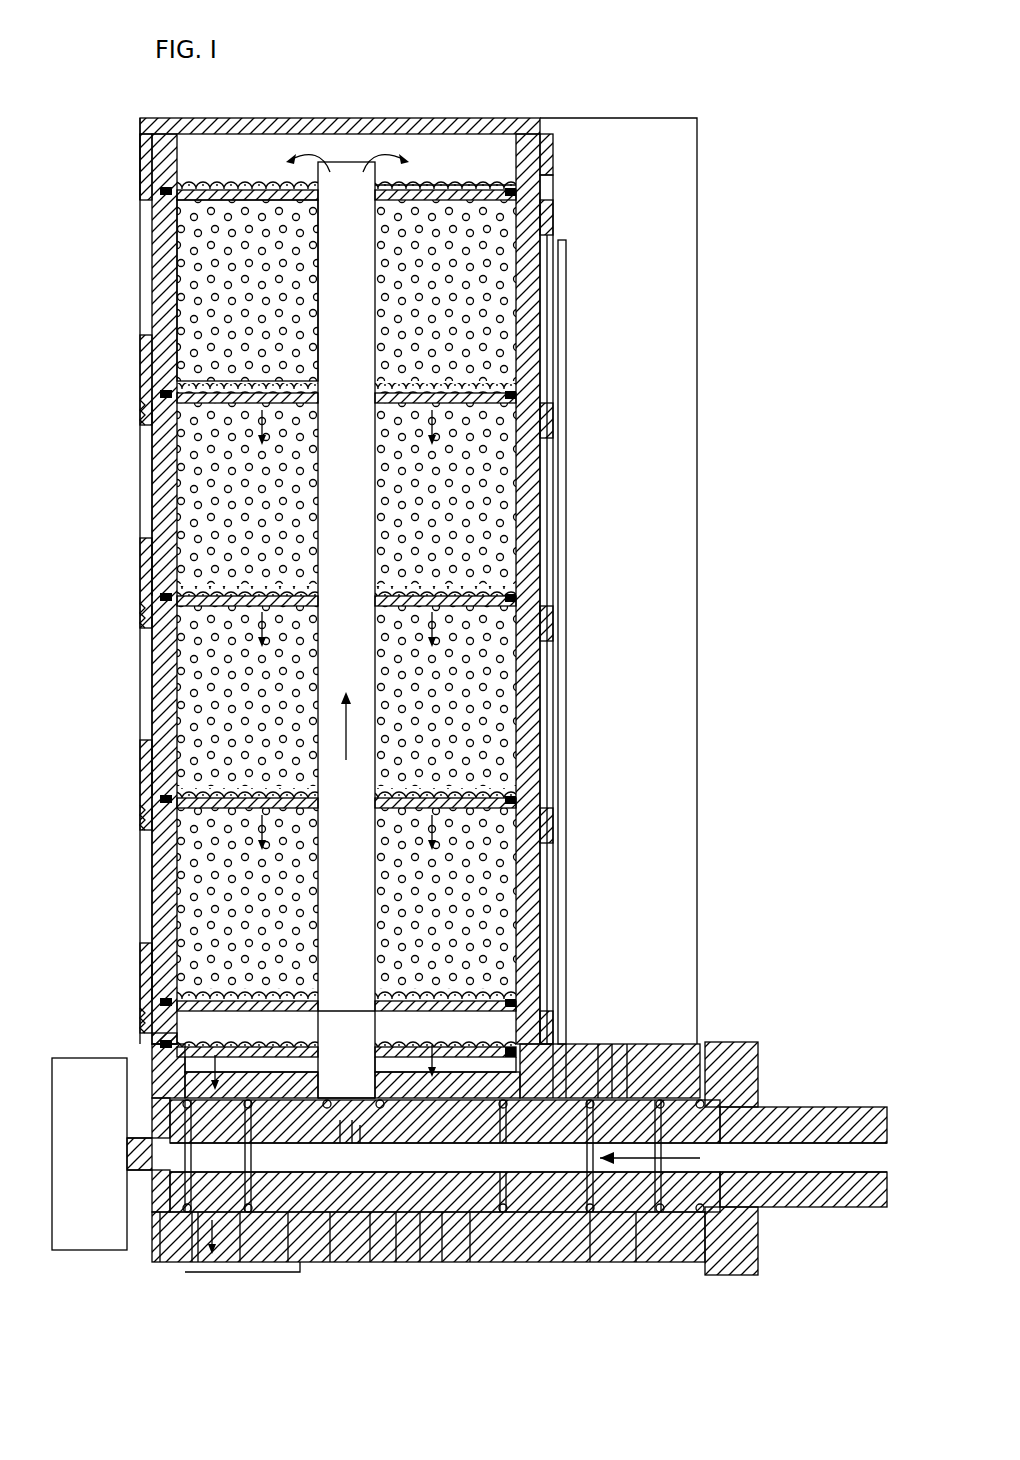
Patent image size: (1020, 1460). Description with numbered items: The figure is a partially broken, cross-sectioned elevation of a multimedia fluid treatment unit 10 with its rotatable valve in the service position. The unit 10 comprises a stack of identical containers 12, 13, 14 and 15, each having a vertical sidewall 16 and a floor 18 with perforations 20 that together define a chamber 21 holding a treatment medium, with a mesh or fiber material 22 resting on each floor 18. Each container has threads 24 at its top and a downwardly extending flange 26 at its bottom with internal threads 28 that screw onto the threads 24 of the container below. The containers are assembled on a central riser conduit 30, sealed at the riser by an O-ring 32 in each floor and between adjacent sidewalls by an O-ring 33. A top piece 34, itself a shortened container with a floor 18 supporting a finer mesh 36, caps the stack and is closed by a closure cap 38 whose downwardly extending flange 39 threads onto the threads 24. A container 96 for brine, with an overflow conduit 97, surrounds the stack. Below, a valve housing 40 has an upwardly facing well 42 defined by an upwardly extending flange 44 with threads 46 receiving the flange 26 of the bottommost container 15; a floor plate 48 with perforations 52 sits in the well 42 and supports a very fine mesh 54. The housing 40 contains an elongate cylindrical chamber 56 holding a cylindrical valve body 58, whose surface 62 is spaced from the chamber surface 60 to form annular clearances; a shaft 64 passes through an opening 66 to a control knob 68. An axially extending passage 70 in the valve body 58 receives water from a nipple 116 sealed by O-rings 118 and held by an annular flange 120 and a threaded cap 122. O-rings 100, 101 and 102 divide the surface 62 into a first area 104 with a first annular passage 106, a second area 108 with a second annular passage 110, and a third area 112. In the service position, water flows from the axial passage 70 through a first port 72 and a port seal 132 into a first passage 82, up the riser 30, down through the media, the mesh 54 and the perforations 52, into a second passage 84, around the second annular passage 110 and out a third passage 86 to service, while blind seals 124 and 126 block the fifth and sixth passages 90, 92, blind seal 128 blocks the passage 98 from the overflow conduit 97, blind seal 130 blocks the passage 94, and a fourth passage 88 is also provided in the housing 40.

The multimedia fluid treatment unit 10 is at (138, 306).
The container 12 is at (165, 250).
The container 13 is at (165, 485).
The container 14 is at (165, 680).
The container 15 is at (165, 880).
The vertical sidewall 16 is at (165, 335).
The floor 18 is at (275, 180).
The perforations 20 is at (462, 182).
The chamber 21 is at (232, 283).
The mesh or fiber material 22 is at (480, 375).
The threads 24 is at (152, 135).
The downwardly extending flange 26 is at (148, 428).
The internal threads 28 is at (548, 215).
The riser conduit 30 is at (360, 511).
The O-ring 32 is at (336, 395).
The O-ring 33 is at (514, 396).
The top piece 34 is at (150, 150).
The mesh 36 is at (430, 182).
The closure cap 38 is at (333, 125).
The downwardly extending flange 39 is at (553, 152).
The valve housing 40 is at (538, 1265).
The upwardly facing well 42 is at (396, 1060).
The upwardly extending flange 44 is at (160, 1045).
The threads 46 is at (150, 1010).
The floor plate 48 is at (440, 1060).
The perforations 52 is at (490, 1065).
The very fine mesh 54 is at (250, 1100).
The elongate cylindrical chamber 56 is at (422, 1225).
The cylindrical valve body 58 is at (332, 1240).
The surface of the cylindrical chamber 60 is at (444, 1240).
The surface of the valve body 62 is at (470, 1220).
The shaft 64 is at (130, 1238).
The opening 66 is at (140, 1200).
The control knob 68 is at (55, 1060).
The axially extending passage 70 is at (464, 1172).
The first port 72 is at (346, 1132).
The first passage 82 is at (345, 1075).
The second passage 84 is at (205, 1100).
The third passage 86 is at (240, 1225).
The fourth passage 88 is at (304, 1240).
The fifth passage 90 is at (625, 1050).
The sixth passage 92 is at (605, 1050).
The passage 94 is at (270, 1100).
The container 96 is at (662, 459).
The overflow conduit 97 is at (566, 252).
The passage 98 is at (540, 1100).
The O-ring 100 is at (158, 1212).
The O-ring 101 is at (290, 1215).
The O-ring 102 is at (590, 1215).
The first area 104 is at (372, 1225).
The first annular passage 106 is at (396, 1215).
The second area 108 is at (195, 1225).
The second annular passage 110 is at (212, 1240).
The third area 112 is at (636, 1215).
The nipple 116 is at (782, 1107).
The O-rings 118 is at (762, 1205).
The annular flange 120 is at (760, 1225).
The threaded cap 122 is at (740, 1060).
The blind seal 124 is at (700, 1165).
The blind seal 126 is at (598, 1100).
The blind seal 128 is at (510, 1100).
The blind seal 130 is at (330, 1060).
The port seal 132 is at (366, 1148).